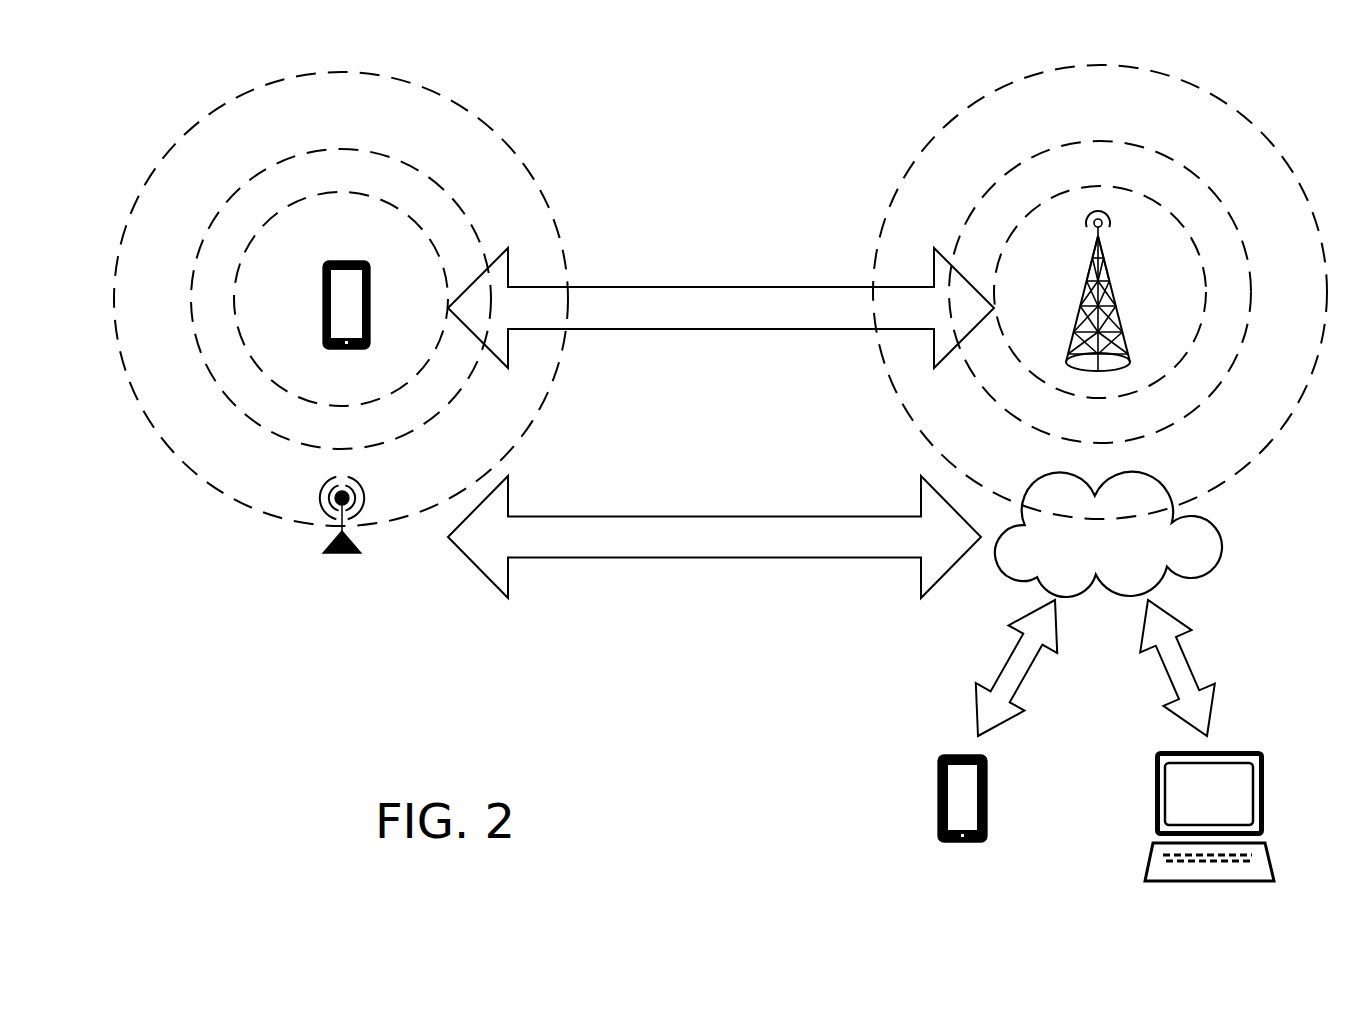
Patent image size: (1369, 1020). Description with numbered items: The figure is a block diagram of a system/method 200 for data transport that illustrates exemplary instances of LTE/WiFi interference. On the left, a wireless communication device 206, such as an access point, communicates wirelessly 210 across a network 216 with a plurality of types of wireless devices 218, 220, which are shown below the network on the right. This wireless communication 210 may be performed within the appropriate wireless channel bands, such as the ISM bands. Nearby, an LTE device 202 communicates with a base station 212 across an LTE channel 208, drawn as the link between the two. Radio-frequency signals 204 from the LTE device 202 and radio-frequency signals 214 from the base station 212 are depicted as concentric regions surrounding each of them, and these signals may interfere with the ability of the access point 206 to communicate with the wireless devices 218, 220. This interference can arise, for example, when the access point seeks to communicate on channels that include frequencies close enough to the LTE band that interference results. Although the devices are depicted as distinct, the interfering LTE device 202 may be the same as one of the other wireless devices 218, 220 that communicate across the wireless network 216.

The system/method for data transport 200 is at (744, 61).
The LTE device 202 is at (384, 270).
The radio-frequency signals 204 is at (287, 447).
The wireless communication device 206 is at (342, 560).
The LTE channel 208 is at (745, 318).
The wireless communication 210 is at (740, 547).
The base station 212 is at (1076, 255).
The radio-frequency signals 214 is at (1239, 429).
The network 216 is at (1125, 563).
The wireless device 218 is at (925, 794).
The wireless device 220 is at (1136, 812).